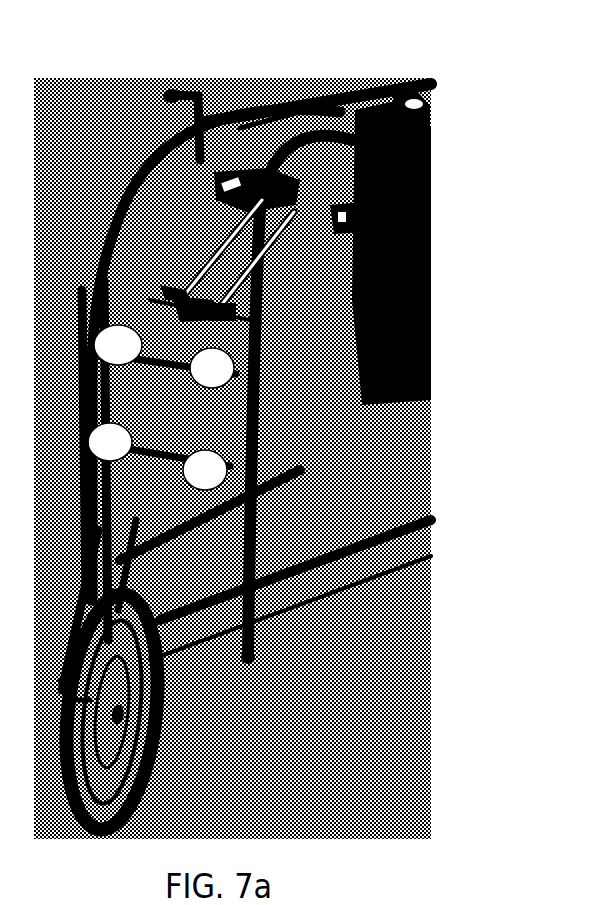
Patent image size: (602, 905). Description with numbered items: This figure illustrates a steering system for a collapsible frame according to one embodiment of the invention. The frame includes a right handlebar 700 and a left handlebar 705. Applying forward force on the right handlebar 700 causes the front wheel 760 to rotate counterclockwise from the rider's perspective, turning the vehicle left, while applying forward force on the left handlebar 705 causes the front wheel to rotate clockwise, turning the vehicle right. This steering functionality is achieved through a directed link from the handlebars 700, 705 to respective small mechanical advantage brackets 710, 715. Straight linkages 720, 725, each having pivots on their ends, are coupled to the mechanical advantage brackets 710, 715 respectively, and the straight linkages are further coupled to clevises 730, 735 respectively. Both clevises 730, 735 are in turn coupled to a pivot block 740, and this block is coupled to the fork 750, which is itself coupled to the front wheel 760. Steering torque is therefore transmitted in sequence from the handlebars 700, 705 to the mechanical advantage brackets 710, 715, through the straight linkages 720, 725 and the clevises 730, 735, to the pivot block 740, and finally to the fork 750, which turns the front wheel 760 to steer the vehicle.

The right handlebar 700 is at (170, 93).
The left handlebar 705 is at (428, 151).
The mechanical advantage bracket 710 is at (253, 165).
The mechanical advantage bracket 715 is at (345, 218).
The straight linkage 720 is at (200, 213).
The straight linkage 725 is at (430, 265).
The clevis 730 is at (178, 300).
The clevis 735 is at (222, 314).
The pivot block 740 is at (165, 292).
The fork 750 is at (83, 440).
The front wheel 760 is at (155, 675).